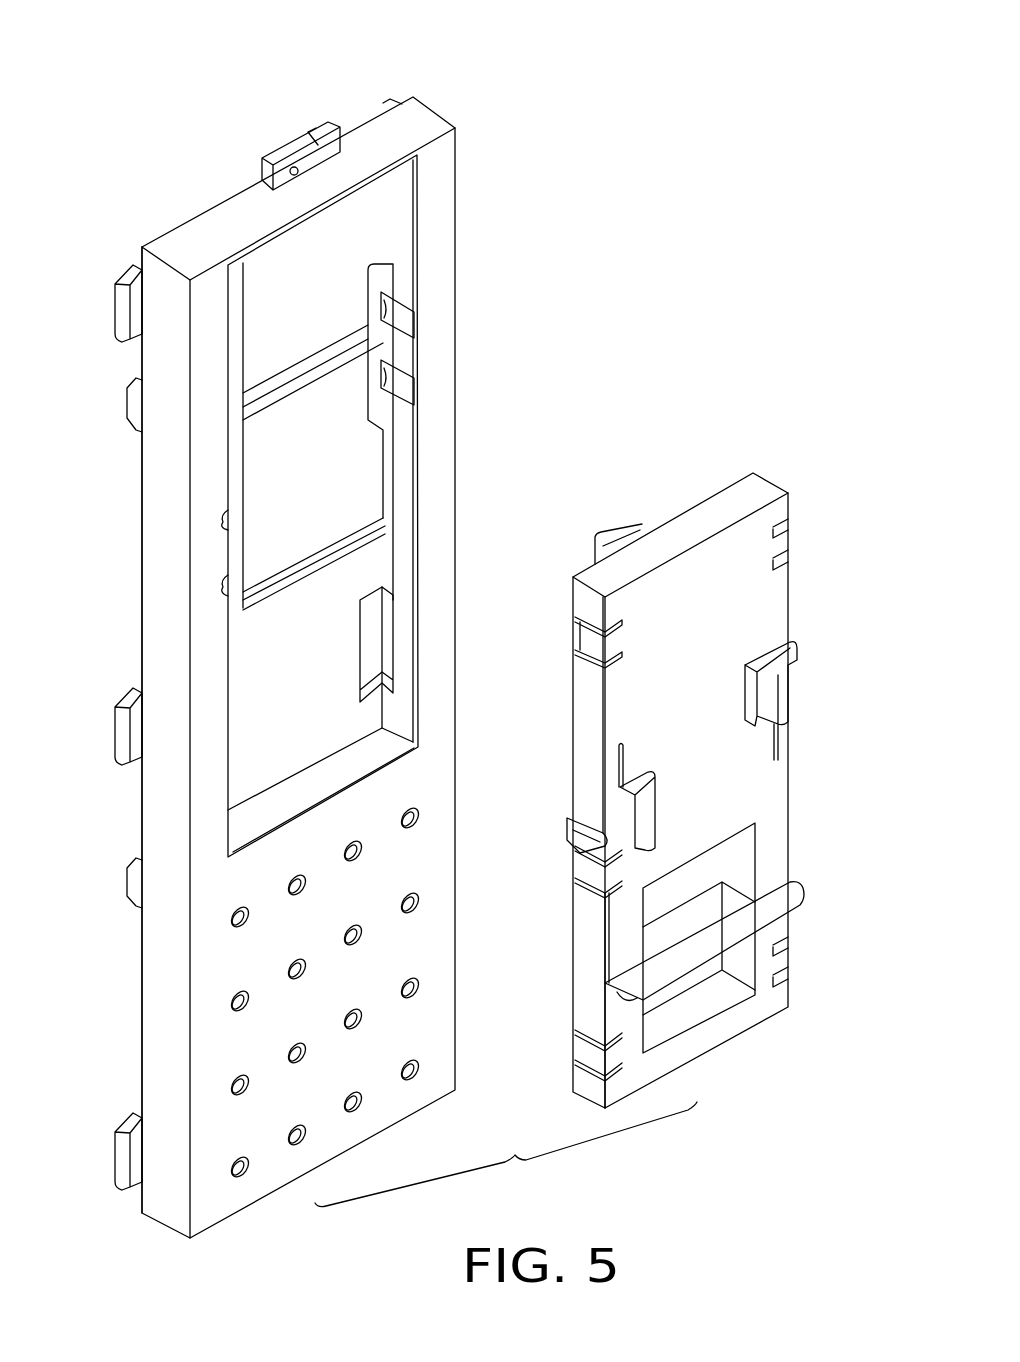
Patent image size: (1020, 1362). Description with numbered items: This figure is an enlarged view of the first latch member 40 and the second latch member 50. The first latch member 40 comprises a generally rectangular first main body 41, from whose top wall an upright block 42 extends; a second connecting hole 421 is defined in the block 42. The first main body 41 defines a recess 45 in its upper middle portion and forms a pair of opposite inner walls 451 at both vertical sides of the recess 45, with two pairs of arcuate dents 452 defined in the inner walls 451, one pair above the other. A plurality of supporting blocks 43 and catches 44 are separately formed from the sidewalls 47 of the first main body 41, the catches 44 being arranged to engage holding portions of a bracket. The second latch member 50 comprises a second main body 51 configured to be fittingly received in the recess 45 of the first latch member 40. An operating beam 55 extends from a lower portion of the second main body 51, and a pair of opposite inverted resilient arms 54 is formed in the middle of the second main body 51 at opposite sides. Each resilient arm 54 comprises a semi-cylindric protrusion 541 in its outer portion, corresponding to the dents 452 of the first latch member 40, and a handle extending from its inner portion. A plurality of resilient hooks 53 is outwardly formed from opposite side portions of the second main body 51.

The first latch member 40 is at (448, 103).
The first main body 41 is at (222, 1003).
The upright block 42 is at (303, 140).
The second connecting hole 421 is at (295, 168).
The supporting blocks 43 is at (135, 880).
The catches 44 is at (130, 292).
The recess 45 is at (265, 649).
The inner walls 451 is at (403, 435).
The arcuate dents 452 is at (410, 320).
The sidewalls 47 is at (162, 571).
The second latch member 50 is at (728, 420).
The second main body 51 is at (768, 595).
The resilient hooks 53 is at (588, 638).
The inverted resilient arms 54 is at (615, 805).
The semi-cylindric protrusion 541 is at (637, 830).
The operating beam 55 is at (788, 898).